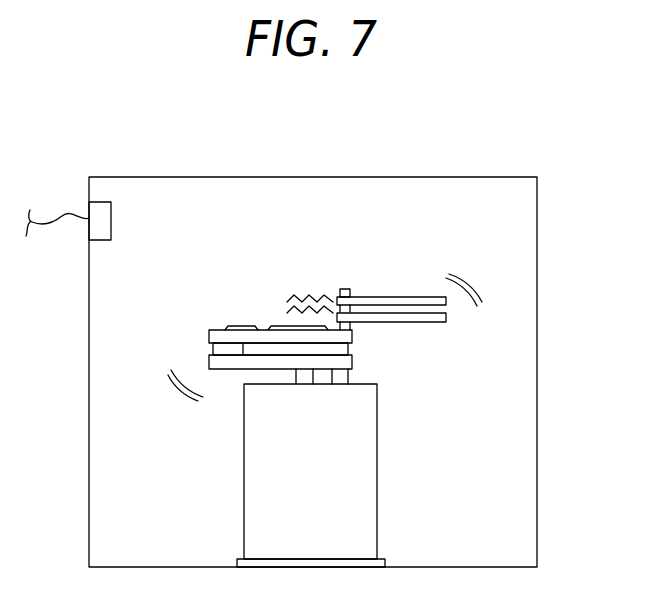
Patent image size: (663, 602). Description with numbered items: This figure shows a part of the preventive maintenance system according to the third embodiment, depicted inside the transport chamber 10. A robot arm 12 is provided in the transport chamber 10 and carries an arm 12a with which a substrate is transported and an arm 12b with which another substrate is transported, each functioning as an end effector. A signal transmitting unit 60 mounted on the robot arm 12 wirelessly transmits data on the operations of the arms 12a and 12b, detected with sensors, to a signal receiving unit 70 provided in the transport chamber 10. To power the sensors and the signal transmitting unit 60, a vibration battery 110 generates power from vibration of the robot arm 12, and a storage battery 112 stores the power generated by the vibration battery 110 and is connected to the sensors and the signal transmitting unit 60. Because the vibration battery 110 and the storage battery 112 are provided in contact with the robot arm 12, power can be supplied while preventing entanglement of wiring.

The transport chamber 10 is at (449, 177).
The signal receiving unit 70 is at (99, 202).
The robot arm 12 is at (352, 337).
The arm 12a is at (419, 297).
The arm 12b is at (447, 318).
The signal transmitting unit 60 is at (346, 289).
The vibration battery 110 is at (271, 326).
The storage battery 112 is at (230, 326).